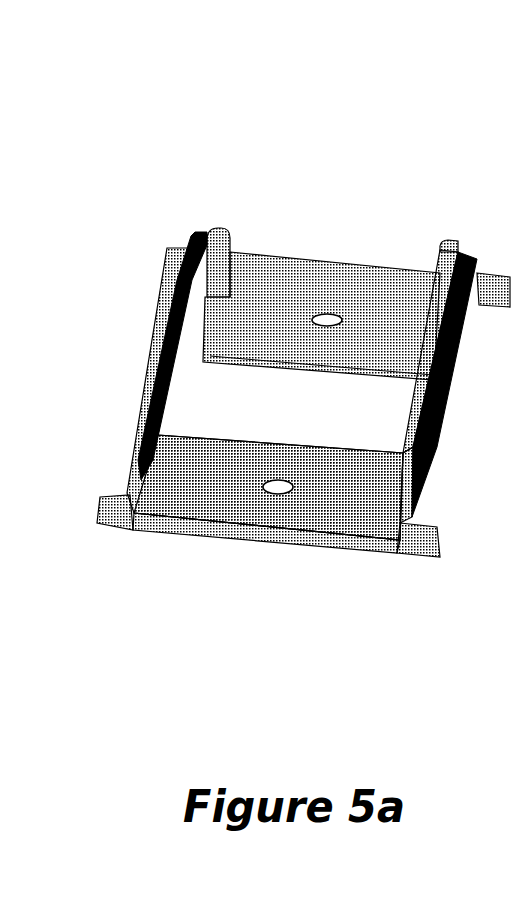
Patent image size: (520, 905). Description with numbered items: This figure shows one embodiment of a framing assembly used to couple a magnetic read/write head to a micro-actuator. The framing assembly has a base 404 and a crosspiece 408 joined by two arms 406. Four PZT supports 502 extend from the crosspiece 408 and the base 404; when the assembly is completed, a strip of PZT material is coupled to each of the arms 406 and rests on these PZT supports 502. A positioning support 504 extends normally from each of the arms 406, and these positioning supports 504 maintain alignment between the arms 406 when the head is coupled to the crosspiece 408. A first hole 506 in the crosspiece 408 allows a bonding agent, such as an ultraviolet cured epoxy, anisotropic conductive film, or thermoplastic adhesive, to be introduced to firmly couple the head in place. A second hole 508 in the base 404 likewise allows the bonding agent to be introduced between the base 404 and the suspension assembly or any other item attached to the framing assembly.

The base 404 is at (156, 523).
The arms 406 is at (158, 295).
The crosspiece 408 is at (260, 282).
The PZT supports 502 is at (178, 230).
The positioning support 504 is at (214, 220).
The first hole 506 is at (326, 302).
The second hole 508 is at (283, 508).